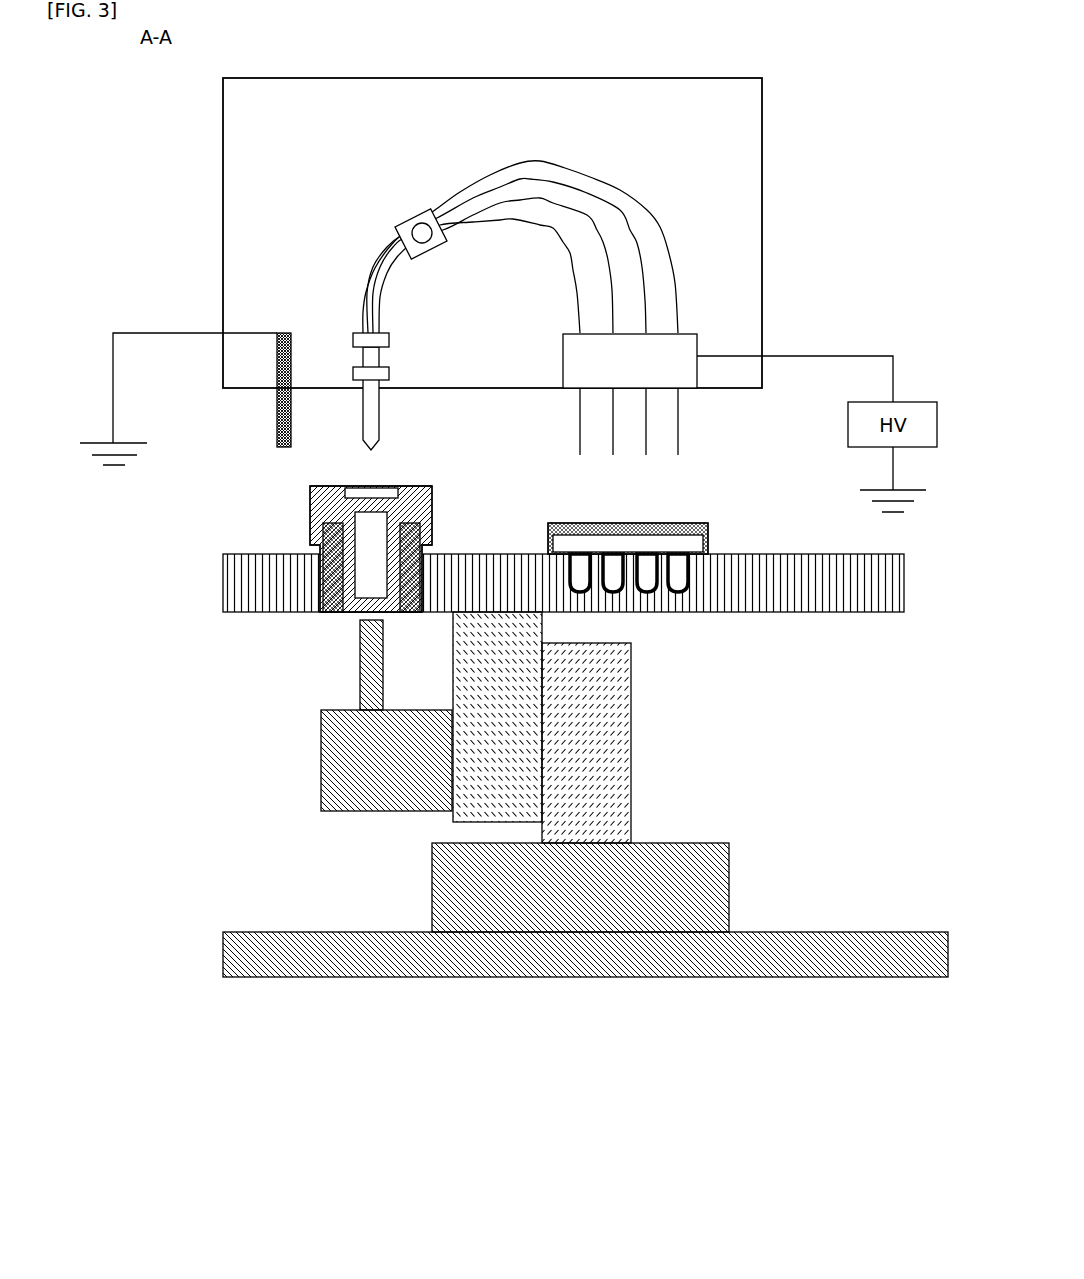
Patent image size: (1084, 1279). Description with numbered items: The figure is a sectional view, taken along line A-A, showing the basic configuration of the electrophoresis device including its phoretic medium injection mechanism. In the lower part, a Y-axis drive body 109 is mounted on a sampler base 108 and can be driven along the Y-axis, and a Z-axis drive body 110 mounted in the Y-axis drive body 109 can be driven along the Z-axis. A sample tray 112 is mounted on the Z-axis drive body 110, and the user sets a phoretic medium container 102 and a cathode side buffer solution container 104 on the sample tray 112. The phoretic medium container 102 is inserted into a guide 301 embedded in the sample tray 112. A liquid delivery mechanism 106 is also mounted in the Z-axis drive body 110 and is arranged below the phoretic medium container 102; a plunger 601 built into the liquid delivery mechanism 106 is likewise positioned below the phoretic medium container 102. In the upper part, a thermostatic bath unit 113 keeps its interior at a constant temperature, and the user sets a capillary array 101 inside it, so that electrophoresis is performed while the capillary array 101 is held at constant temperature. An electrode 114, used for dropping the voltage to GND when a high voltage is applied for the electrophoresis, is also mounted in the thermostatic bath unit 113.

The capillary array 101 is at (673, 278).
The phoretic medium container 102 is at (268, 582).
The cathode side buffer solution container 104 is at (710, 533).
The liquid delivery mechanism 106 is at (333, 770).
The sampler base 108 is at (623, 953).
The Y-axis drive body 109 is at (623, 757).
The Z-axis drive body 110 is at (477, 800).
The sample tray 112 is at (795, 590).
The thermostatic bath unit 113 is at (729, 178).
The electrode 114 is at (277, 333).
The guide 301 is at (323, 613).
The plunger 601 is at (360, 667).